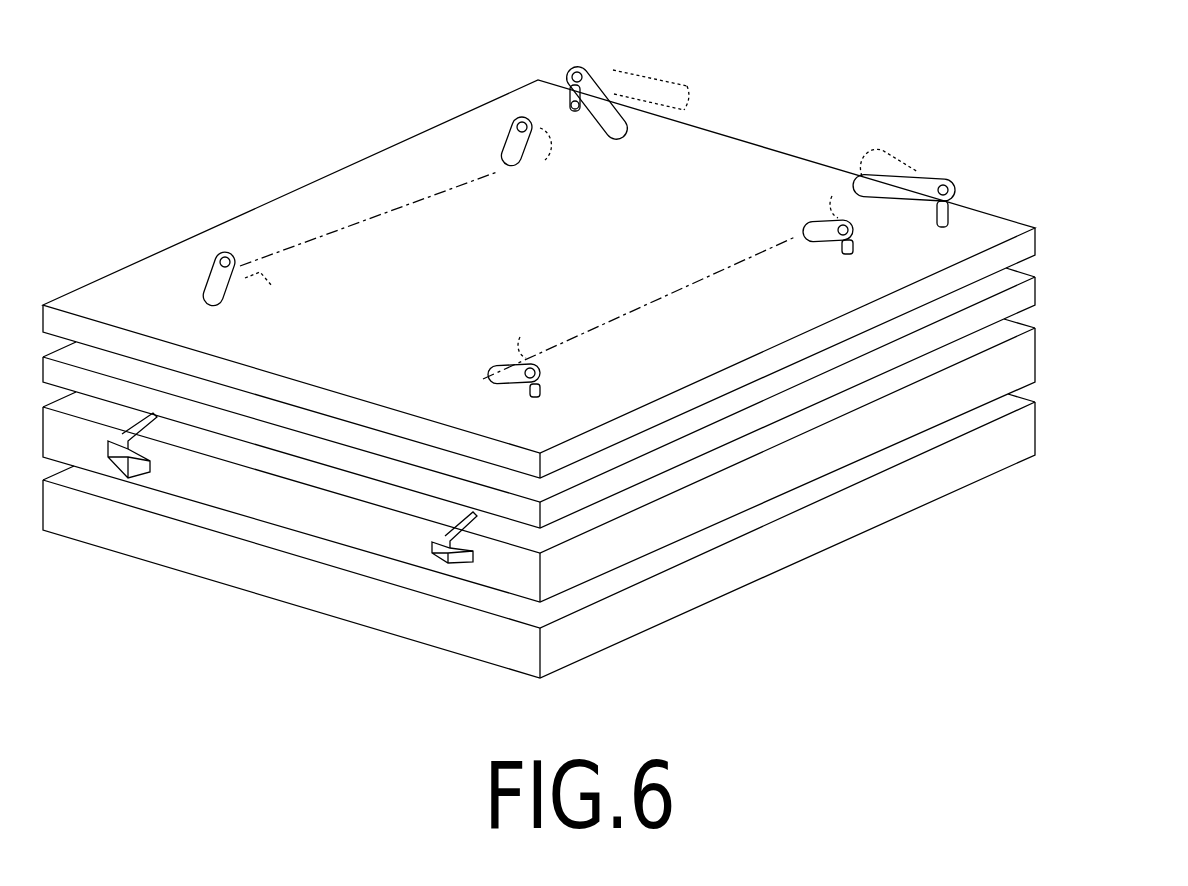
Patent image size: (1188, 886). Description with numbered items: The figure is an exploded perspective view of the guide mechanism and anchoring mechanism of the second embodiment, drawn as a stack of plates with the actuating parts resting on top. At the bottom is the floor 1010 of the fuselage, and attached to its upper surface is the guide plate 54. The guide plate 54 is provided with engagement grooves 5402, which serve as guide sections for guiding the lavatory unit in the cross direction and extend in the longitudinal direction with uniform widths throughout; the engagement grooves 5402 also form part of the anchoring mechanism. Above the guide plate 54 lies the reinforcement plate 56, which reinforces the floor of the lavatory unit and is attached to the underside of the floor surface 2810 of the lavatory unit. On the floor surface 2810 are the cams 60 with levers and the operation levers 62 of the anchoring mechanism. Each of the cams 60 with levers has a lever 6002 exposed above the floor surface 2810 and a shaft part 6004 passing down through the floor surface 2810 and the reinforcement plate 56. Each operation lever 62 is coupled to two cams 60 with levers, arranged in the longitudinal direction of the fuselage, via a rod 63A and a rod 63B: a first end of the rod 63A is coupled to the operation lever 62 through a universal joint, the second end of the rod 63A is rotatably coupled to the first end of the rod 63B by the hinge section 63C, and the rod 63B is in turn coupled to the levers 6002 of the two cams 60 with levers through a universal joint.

The floor surface 2810 is at (1035, 243).
The reinforcement plate 56 is at (1035, 292).
The guide plate 54 is at (1035, 355).
The floor 1010 is at (1035, 430).
The engagement grooves 5402 is at (130, 465).
The cams with levers 60 is at (503, 220).
The levers 6002 is at (210, 272).
The shaft parts 6004 is at (854, 246).
The operation levers 62 is at (613, 98).
The rod 63A is at (543, 123).
The rod 63B is at (380, 218).
The hinge section 63C is at (522, 100).